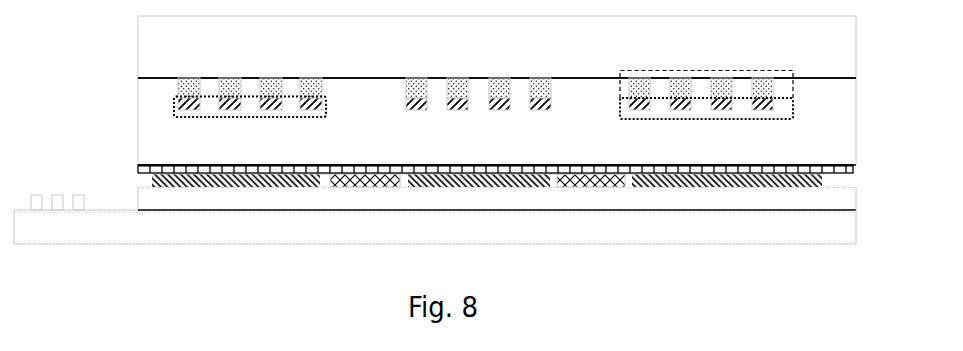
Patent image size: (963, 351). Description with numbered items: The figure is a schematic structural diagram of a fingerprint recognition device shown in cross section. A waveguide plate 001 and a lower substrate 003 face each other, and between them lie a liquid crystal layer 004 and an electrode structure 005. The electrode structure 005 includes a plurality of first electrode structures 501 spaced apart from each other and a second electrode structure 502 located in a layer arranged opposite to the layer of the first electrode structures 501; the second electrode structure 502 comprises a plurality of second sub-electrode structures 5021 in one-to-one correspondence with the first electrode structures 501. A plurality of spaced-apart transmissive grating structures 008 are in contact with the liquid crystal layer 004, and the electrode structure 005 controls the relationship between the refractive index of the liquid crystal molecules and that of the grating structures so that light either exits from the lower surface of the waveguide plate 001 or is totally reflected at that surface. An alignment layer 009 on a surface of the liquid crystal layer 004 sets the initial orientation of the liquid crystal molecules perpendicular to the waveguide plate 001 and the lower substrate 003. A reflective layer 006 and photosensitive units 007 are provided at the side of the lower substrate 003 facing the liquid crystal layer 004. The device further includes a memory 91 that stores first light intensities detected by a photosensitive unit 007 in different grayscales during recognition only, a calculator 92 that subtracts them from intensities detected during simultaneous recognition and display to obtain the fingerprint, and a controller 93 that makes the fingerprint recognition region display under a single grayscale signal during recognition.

The waveguide plate 001 is at (856, 40).
The lower substrate 003 is at (856, 226).
The liquid crystal layer 004 is at (145, 115).
The electrode structure 005 is at (88, 137).
The reflective layer 006 is at (856, 196).
The photosensitive units 007 is at (578, 188).
The transmissive grating structures 008 is at (793, 90).
The alignment layer 009 is at (853, 170).
The first electrode structures 501 is at (793, 111).
The second electrode structure 502 is at (150, 181).
The second sub-electrode structures 5021 is at (245, 182).
The memory 91 is at (79, 210).
The calculator 92 is at (57, 210).
The controller 93 is at (35, 210).